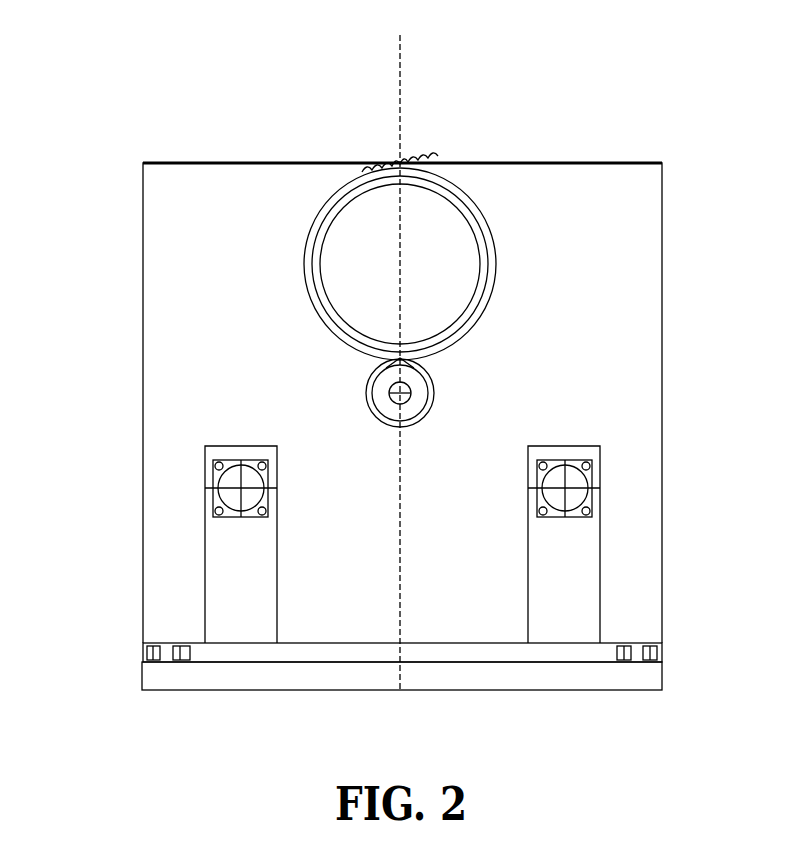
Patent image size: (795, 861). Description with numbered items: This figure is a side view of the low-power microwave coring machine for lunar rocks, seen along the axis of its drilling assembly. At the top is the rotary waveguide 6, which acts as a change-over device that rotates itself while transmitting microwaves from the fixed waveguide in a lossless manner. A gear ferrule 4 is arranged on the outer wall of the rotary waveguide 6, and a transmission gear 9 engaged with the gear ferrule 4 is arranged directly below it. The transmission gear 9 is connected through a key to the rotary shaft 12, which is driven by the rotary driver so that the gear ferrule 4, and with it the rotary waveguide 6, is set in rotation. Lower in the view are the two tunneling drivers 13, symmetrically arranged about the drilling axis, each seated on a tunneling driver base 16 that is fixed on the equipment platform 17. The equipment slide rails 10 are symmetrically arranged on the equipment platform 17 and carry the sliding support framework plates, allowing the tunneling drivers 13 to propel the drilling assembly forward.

The gear ferrule 4 is at (350, 187).
The rotary waveguide 6 is at (470, 225).
The transmission gear 9 is at (382, 388).
The rotary shaft 12 is at (418, 385).
The tunneling driver 13 is at (597, 480).
The tunneling driver base 16 is at (600, 566).
The equipment slide rail 10 is at (662, 643).
The equipment platform 17 is at (662, 690).